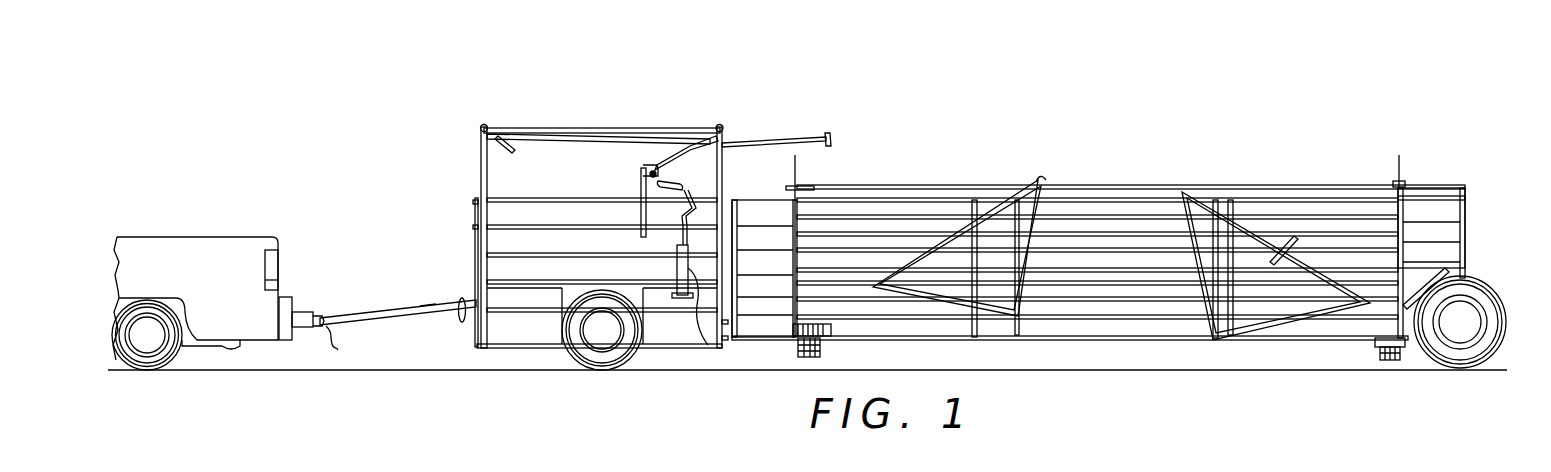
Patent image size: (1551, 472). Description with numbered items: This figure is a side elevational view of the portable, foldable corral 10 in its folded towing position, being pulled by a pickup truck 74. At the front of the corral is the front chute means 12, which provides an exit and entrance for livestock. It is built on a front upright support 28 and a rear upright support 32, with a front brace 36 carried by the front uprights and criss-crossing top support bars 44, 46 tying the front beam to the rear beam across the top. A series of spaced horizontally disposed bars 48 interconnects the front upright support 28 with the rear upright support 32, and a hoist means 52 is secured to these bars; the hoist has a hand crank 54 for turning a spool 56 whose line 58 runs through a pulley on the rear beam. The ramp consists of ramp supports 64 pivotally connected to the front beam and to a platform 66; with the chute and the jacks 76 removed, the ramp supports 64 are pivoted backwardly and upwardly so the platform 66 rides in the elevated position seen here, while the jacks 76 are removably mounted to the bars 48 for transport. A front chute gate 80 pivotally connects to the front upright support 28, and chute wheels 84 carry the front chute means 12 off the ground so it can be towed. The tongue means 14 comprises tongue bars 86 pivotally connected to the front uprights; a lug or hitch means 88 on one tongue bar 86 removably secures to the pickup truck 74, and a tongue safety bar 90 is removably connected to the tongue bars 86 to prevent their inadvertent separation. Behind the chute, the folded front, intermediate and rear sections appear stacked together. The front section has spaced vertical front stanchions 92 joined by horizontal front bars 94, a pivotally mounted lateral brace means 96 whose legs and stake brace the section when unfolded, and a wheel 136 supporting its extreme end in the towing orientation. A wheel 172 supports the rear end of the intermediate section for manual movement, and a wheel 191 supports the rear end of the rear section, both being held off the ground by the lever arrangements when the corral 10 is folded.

The portable, foldable corral 10 is at (1135, 178).
The front chute means 12 is at (658, 350).
The tongue means 14 is at (383, 325).
The front upright support 28 is at (478, 176).
The rear upright support 32 is at (720, 188).
The front brace 36 is at (408, 468).
The top support bar 44 is at (634, 129).
The top support bar 46 is at (498, 146).
The horizontally disposed bars 48 is at (517, 197).
The hoist means 52 is at (637, 189).
The hand crank 54 is at (683, 188).
The spool 56 is at (714, 124).
The line 58 is at (723, 147).
The ramp supports 64 is at (607, 131).
The platform 66 is at (784, 138).
The pickup truck 74 is at (218, 236).
The jacks 76 is at (700, 340).
The front chute gates 80 is at (475, 232).
The chute wheels 84 is at (605, 358).
The tongue bars 86 is at (428, 310).
The lug or hitch means 88 is at (333, 331).
The tongue safety bar 90 is at (462, 318).
The vertical front stanchions 92 is at (1458, 215).
The horizontal front bars 94 is at (1432, 190).
The lateral brace means 96 is at (1213, 343).
The wheel 136 is at (1472, 358).
The wheel 172 is at (802, 362).
The wheel 191 is at (1401, 362).